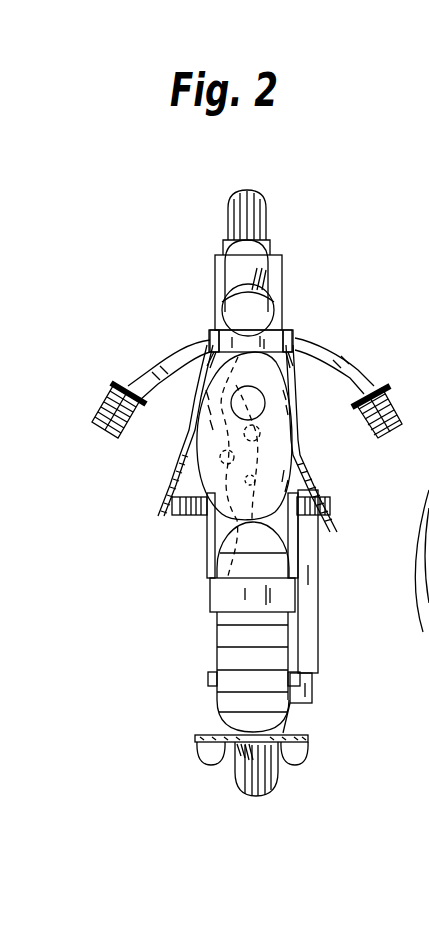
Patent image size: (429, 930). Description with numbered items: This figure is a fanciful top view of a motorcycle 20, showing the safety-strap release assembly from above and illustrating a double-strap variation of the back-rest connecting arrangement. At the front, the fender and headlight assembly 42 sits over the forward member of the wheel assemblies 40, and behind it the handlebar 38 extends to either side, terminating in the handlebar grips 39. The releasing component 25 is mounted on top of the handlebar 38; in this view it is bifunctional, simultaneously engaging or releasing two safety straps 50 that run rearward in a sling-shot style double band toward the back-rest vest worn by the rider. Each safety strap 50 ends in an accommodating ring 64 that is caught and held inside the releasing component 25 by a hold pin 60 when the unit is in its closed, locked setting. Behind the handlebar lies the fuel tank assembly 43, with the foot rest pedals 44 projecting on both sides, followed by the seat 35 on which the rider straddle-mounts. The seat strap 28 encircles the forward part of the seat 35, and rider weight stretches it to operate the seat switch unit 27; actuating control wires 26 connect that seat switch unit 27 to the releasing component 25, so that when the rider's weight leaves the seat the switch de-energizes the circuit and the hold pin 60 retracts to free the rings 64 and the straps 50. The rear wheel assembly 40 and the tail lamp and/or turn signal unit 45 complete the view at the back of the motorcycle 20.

The motorcycle 20 is at (413, 354).
The releasing component 25 is at (198, 317).
The actuating control wires 26 is at (382, 343).
The seat switch unit 27 is at (214, 593).
The seat strap 28 is at (282, 595).
The seat 35 is at (326, 590).
The handlebar 38 is at (158, 357).
The handlebar grips 39 is at (125, 413).
The wheel assemblies 40 is at (220, 187).
The fender and headlight assembly 42 is at (291, 247).
The fuel tank assembly 43 is at (188, 468).
The foot rest pedals 44 is at (192, 514).
The tail lamp and/or turn signal unit 45 is at (210, 757).
The safety strap 50 is at (182, 467).
The hold pin 60 is at (195, 338).
The accommodating ring 64 is at (213, 333).